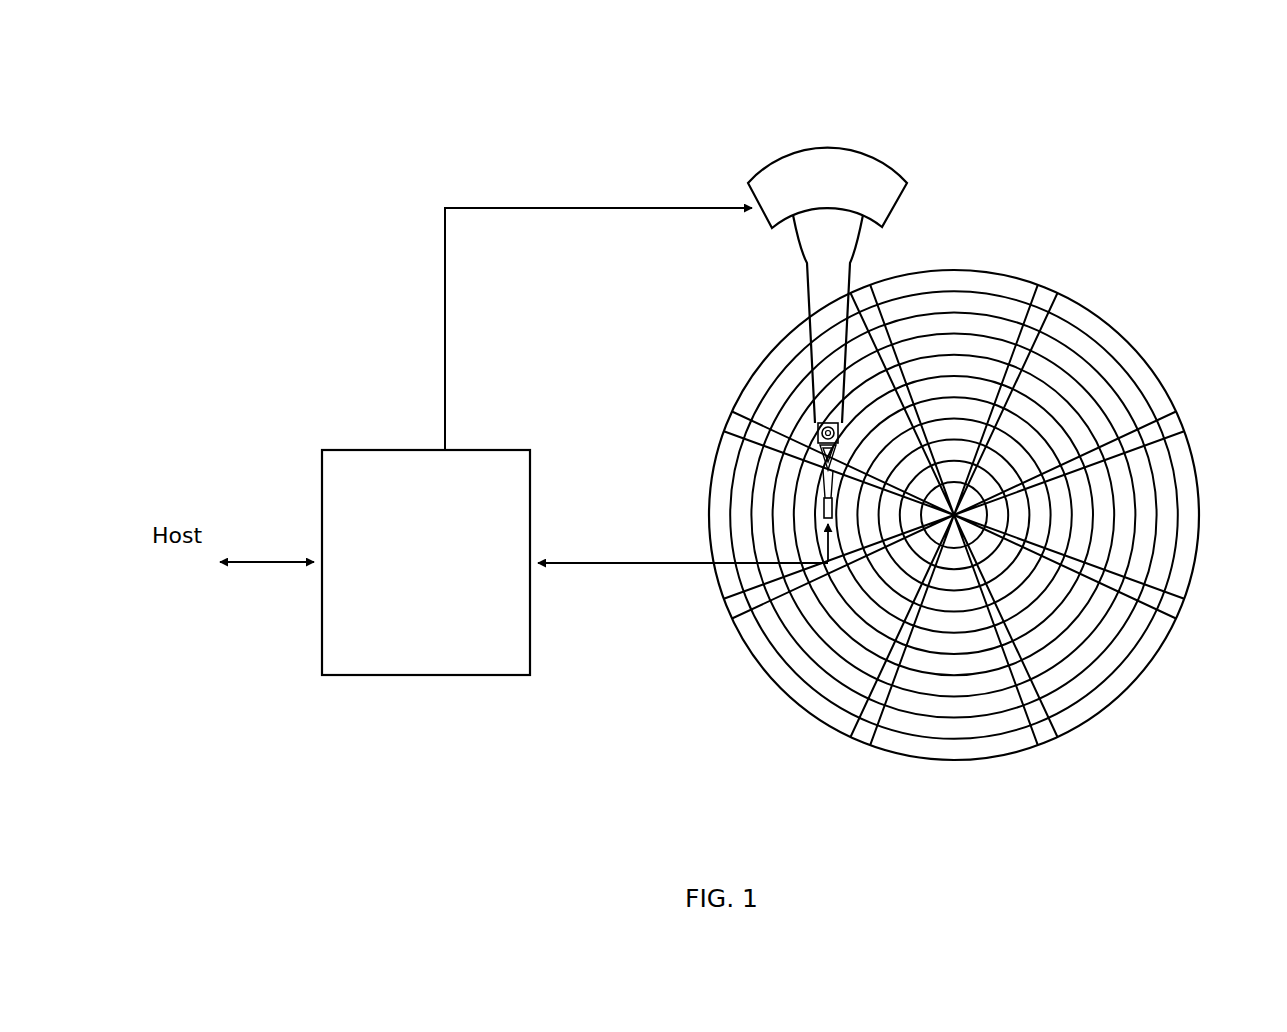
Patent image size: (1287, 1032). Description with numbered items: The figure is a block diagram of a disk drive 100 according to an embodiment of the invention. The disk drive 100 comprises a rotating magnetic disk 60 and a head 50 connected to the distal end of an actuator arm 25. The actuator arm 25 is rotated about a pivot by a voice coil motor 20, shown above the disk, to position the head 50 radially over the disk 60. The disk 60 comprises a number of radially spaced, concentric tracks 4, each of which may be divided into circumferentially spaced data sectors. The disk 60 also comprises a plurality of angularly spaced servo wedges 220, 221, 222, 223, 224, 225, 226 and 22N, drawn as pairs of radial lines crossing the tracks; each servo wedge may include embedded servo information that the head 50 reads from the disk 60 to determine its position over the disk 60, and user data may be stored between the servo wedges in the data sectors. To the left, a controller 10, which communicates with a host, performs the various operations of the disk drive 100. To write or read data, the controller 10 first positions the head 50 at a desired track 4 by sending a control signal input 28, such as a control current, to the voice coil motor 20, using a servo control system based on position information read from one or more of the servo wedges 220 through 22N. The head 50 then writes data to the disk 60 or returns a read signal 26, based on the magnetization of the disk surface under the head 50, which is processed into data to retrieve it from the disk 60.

The disk drive 100 is at (1204, 85).
The track 4 is at (952, 302).
The rotating magnetic disk 60 is at (1126, 325).
The controller 10 is at (510, 448).
The voice coil motor 20 is at (766, 224).
The actuator arm 25 is at (808, 300).
The control signal input 28 is at (445, 289).
The read signal 26 is at (625, 565).
The head 50 is at (819, 526).
The servo wedge 22N is at (866, 290).
The servo wedge 220 is at (1049, 290).
The servo wedge 221 is at (1182, 418).
The servo wedge 222 is at (1180, 612).
The servo wedge 223 is at (1043, 745).
The servo wedge 224 is at (862, 745).
The servo wedge 225 is at (728, 612).
The servo wedge 226 is at (733, 406).